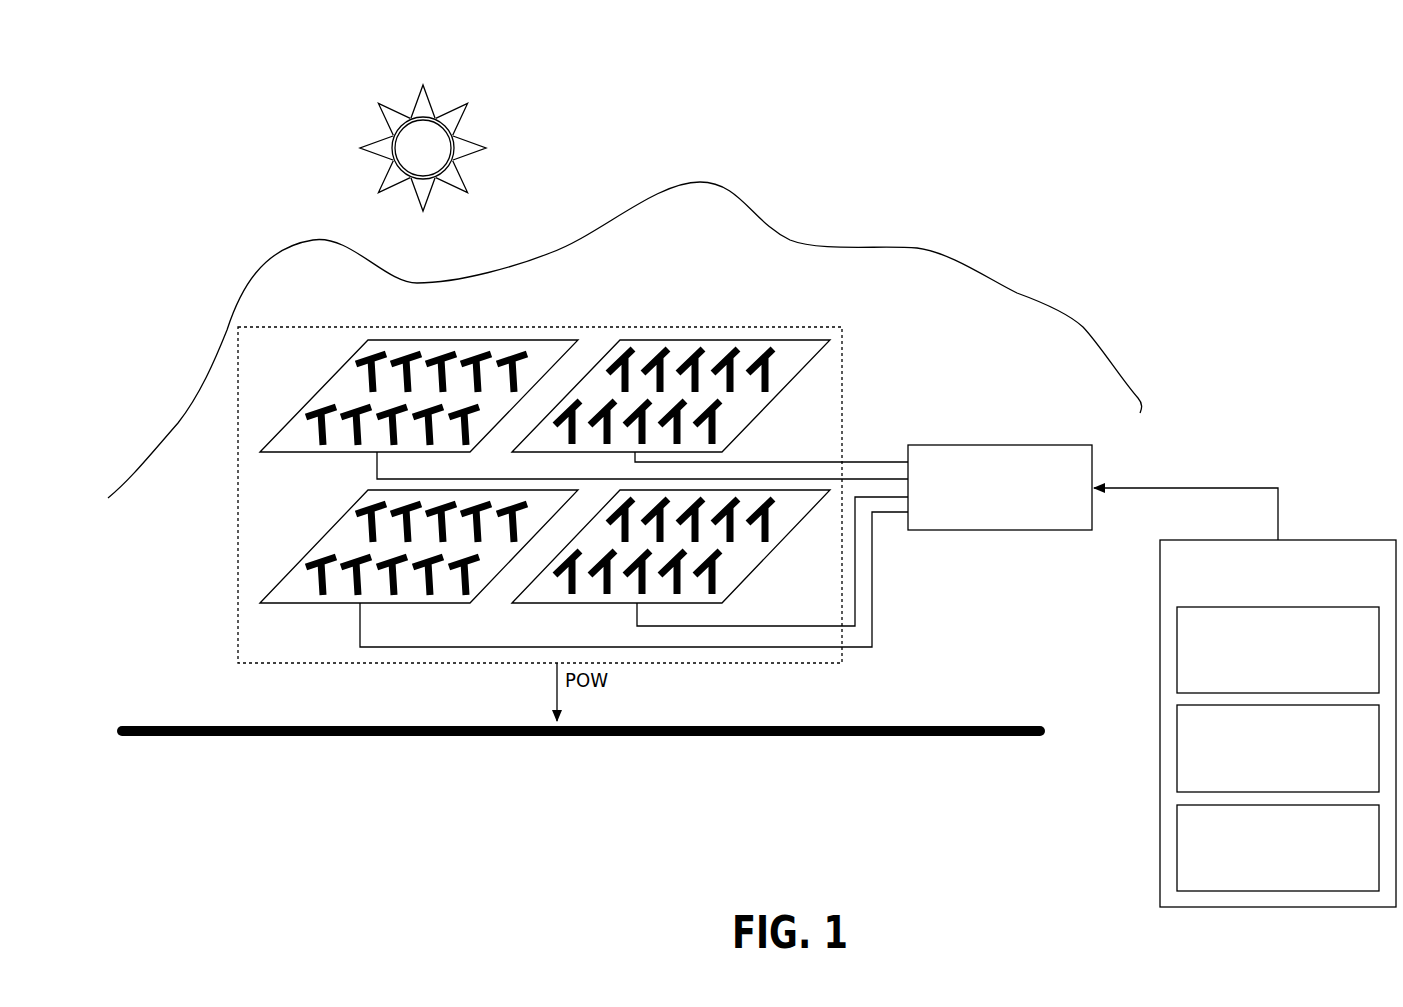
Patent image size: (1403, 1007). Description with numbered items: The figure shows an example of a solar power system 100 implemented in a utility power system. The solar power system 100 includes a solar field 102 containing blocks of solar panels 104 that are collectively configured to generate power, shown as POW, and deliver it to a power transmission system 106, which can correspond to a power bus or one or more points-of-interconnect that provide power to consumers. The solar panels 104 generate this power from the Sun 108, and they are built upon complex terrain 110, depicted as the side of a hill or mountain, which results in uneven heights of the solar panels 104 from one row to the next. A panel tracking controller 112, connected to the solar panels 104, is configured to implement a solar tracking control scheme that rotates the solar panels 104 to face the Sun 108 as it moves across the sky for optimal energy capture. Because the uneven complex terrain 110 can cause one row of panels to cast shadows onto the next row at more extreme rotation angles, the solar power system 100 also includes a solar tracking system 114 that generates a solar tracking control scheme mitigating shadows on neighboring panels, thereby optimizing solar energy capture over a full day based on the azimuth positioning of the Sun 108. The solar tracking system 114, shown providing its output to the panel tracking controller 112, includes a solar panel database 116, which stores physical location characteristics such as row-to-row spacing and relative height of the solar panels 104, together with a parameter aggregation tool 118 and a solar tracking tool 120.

The solar power system 100 is at (1302, 73).
The solar field 102 is at (238, 505).
The solar panels 104 is at (333, 375).
The power transmission system 106 is at (345, 726).
The Sun 108 is at (341, 184).
The complex terrain 110 is at (893, 242).
The panel tracking controller 112 is at (985, 530).
The solar tracking system 114 is at (1245, 697).
The solar panel database 116 is at (1177, 637).
The parameter aggregation tool 118 is at (1177, 748).
The solar tracking tool 120 is at (1177, 848).